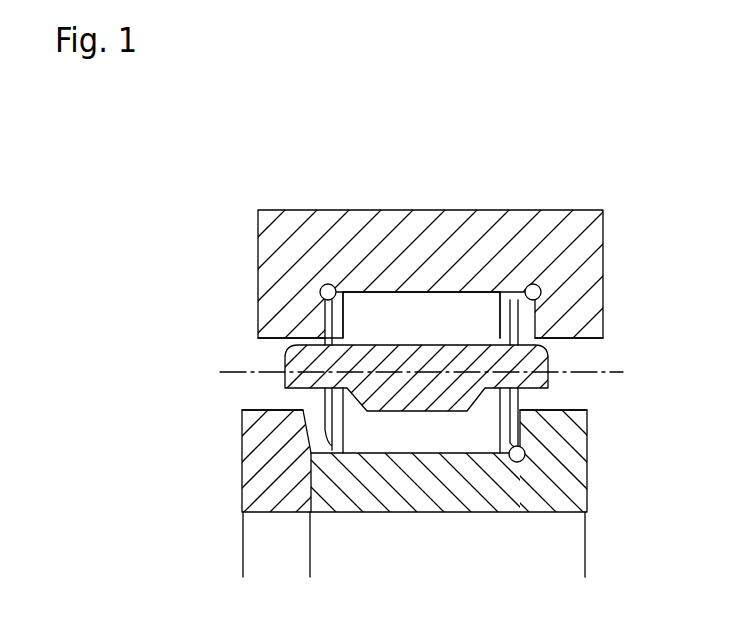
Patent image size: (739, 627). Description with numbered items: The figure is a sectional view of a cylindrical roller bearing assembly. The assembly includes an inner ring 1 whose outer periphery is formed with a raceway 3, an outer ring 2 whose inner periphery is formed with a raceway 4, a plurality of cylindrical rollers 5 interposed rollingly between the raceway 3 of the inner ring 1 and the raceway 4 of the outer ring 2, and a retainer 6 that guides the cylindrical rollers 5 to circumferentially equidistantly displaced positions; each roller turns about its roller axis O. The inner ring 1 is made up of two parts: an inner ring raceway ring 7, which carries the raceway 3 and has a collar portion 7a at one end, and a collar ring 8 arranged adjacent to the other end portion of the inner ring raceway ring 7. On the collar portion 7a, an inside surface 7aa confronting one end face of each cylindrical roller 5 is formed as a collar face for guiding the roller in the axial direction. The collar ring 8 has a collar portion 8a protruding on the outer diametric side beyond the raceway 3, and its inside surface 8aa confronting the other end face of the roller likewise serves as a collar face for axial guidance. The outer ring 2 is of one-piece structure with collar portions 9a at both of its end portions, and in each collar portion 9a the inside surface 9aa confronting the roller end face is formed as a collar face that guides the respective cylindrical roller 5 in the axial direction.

The inner ring 1 is at (400, 499).
The outer ring 2 is at (471, 194).
The raceway 3 is at (413, 452).
The raceway 4 is at (417, 297).
The cylindrical rollers 5 is at (397, 317).
The retainer 6 is at (285, 365).
The inner ring raceway ring 7 is at (417, 498).
The collar portion 7a is at (565, 418).
The inside surface 7aa is at (518, 432).
The collar ring 8 is at (255, 474).
The collar portion 8a is at (268, 413).
The inside surface 8aa is at (312, 437).
The collar portions 9a is at (268, 313).
The inside surface 9aa is at (330, 317).
The roller axis O is at (592, 373).